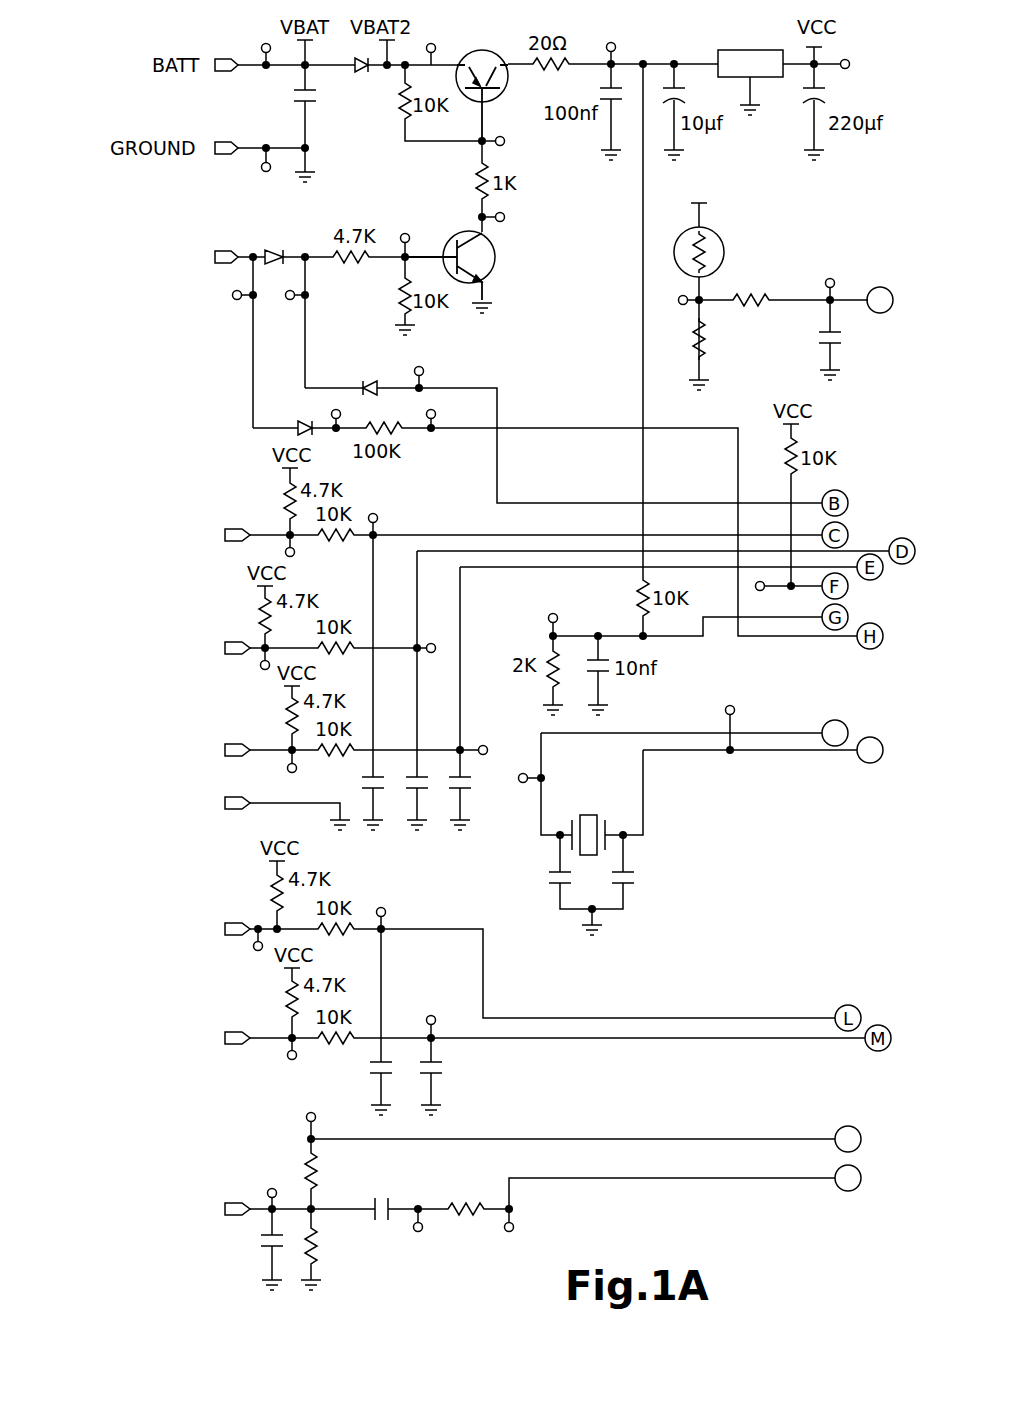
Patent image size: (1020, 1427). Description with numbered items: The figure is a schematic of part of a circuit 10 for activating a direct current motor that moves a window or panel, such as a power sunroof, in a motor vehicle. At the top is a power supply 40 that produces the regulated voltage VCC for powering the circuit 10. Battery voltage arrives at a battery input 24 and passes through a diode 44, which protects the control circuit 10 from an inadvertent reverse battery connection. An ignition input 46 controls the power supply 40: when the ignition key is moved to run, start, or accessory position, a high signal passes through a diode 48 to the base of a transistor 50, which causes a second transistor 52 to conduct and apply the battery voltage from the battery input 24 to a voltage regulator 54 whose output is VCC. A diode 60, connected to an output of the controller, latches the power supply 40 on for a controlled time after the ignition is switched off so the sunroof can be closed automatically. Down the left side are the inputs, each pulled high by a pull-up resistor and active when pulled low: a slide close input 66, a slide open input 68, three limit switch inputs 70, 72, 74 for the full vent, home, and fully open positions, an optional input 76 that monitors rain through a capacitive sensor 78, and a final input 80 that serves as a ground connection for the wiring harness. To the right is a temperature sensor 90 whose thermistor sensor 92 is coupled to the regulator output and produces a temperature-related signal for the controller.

The circuit 10 is at (721, 825).
The battery input 24 is at (240, 50).
The power supply 40 is at (567, 298).
The diode 44 is at (363, 73).
The ignition input 46 is at (230, 266).
The diode 48 is at (262, 250).
The transistor 50 is at (487, 250).
The second transistor 52 is at (510, 82).
The voltage regulator 54 is at (730, 53).
The diode 60 is at (369, 378).
The slide close input 66 is at (241, 528).
The slide open input 68 is at (238, 643).
The first input 70 is at (243, 742).
The second input 72 is at (236, 924).
The third input 74 is at (236, 1030).
The optional input 76 is at (233, 1200).
The capacitive sensor 78 is at (483, 1204).
The final input 80 is at (228, 808).
The temperature sensor 90 is at (772, 274).
The thermistor sensor 92 is at (678, 257).